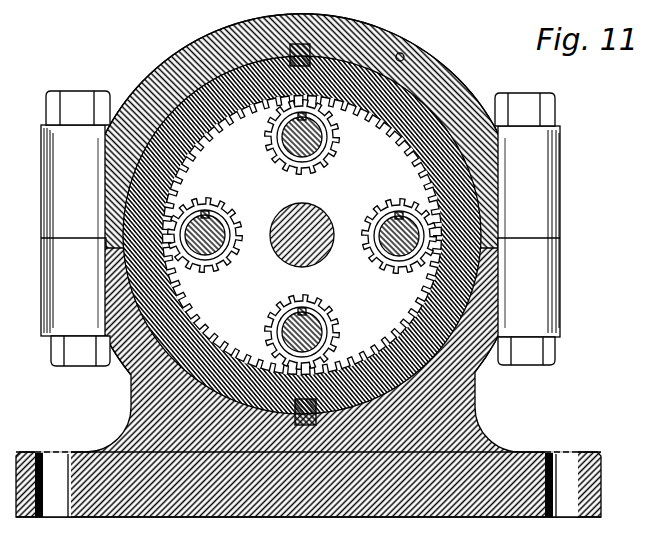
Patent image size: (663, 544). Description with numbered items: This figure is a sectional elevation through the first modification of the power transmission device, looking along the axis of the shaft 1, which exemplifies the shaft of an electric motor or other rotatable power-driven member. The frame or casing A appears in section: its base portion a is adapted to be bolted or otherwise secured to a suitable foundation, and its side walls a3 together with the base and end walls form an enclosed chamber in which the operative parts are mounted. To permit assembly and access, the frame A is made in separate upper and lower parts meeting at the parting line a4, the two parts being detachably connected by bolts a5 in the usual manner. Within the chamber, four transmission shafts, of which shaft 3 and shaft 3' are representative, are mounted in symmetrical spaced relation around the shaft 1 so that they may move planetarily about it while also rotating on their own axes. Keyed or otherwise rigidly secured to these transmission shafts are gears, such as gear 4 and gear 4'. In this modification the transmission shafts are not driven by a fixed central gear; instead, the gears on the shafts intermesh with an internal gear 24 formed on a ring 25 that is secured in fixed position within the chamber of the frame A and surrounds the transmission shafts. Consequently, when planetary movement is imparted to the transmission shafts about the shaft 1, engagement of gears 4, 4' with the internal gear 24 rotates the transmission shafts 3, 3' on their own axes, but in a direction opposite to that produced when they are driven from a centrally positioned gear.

The shaft 1 is at (311, 251).
The transmission shaft 3 is at (294, 143).
The transmission shaft 3' is at (392, 231).
The gear 4 is at (304, 148).
The gear 4' is at (399, 219).
The internal gear 24 is at (359, 121).
The ring 25 is at (381, 78).
The frame A is at (484, 417).
The base portion a is at (424, 509).
The side walls a3 is at (440, 77).
The parting line a4 is at (530, 229).
The bolts a5 is at (502, 87).